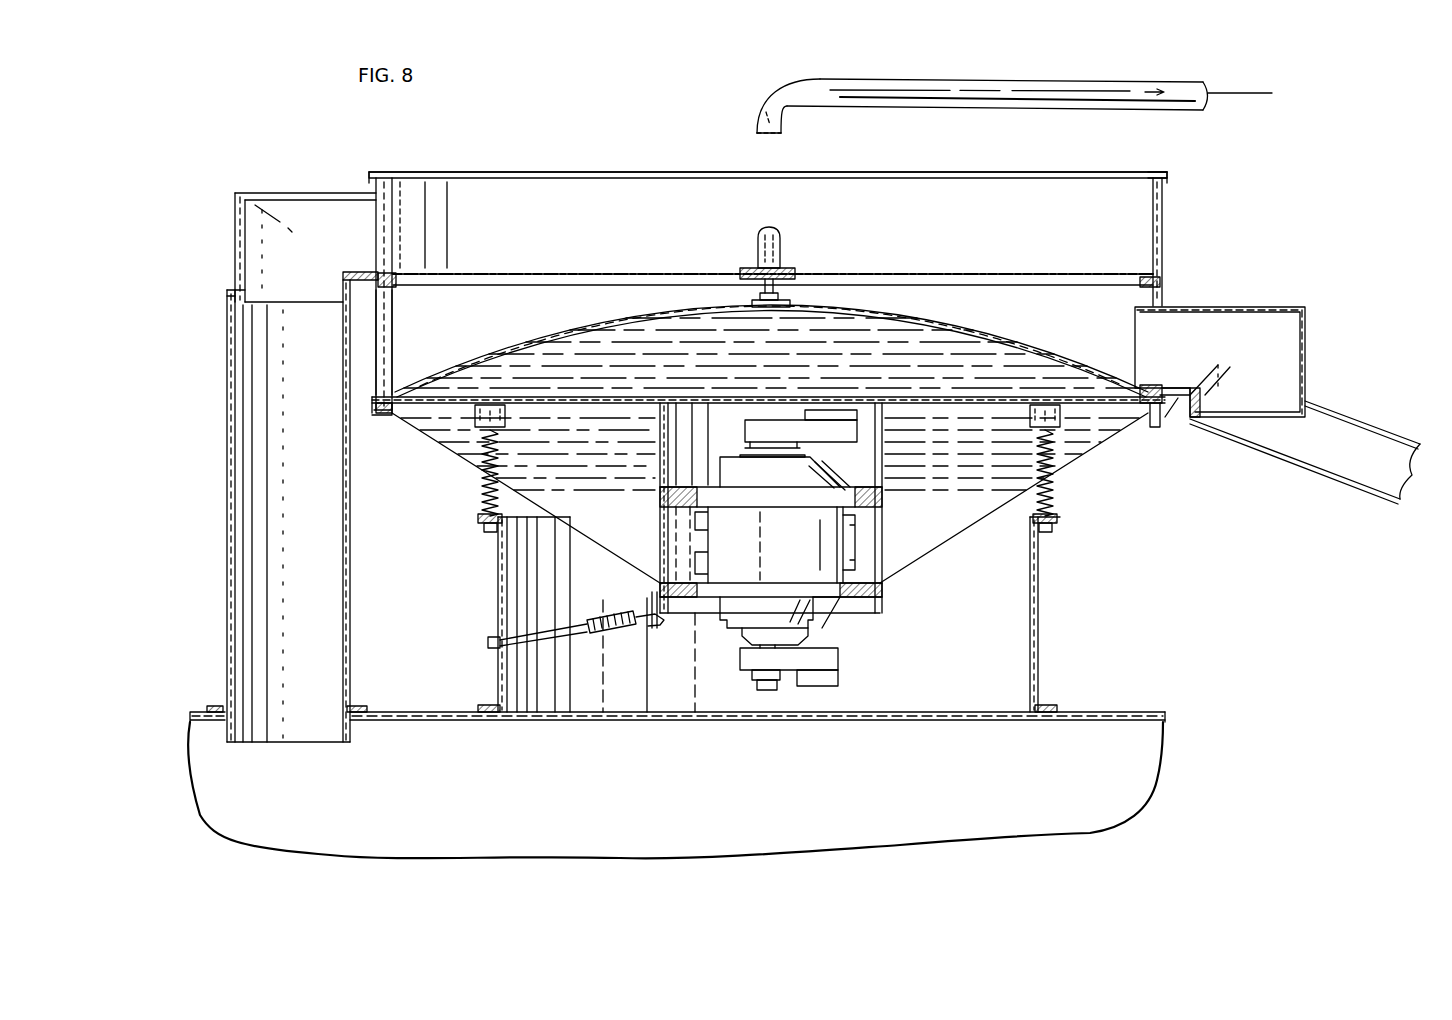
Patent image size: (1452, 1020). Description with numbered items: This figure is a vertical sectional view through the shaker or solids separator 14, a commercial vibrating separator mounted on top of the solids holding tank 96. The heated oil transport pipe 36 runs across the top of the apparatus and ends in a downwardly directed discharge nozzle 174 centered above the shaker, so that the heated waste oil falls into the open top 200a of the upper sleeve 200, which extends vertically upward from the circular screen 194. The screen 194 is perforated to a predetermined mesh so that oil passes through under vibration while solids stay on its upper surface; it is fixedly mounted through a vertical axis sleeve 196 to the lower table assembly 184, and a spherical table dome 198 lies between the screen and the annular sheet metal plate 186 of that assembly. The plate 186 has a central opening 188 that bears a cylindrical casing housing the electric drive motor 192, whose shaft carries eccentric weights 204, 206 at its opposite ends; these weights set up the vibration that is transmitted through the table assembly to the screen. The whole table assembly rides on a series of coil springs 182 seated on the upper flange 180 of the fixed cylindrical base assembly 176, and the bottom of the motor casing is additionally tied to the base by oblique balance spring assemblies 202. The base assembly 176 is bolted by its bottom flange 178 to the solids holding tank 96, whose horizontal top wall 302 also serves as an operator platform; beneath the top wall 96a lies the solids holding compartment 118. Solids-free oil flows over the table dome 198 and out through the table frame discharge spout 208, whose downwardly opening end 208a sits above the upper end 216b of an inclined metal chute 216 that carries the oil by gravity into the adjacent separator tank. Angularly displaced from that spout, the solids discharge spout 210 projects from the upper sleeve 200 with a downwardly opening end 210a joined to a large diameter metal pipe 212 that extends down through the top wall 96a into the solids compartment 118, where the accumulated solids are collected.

The shaker 14 is at (315, 158).
The heated oil transport pipe 36 is at (996, 86).
The discharge nozzle 174 is at (760, 120).
The sleeve 200 is at (1163, 250).
The open top 200a is at (1146, 172).
The screen 194 is at (968, 272).
The table dome 198 is at (590, 324).
The sleeve 196 is at (392, 326).
The lower table assembly 184 is at (620, 392).
The annular sheet metal plate 186 is at (950, 398).
The opening 188 is at (662, 400).
The electric drive motor 192 is at (668, 420).
The eccentric weight 204 is at (832, 410).
The eccentric weight 206 is at (838, 656).
The coil springs 182 is at (480, 500).
The upper flange 180 is at (1058, 525).
The cylindrical base assembly 176 is at (1040, 651).
The top wall of solids holding tank 302 is at (580, 680).
The balance spring assemblies 202 is at (616, 618).
The solids holding tank 96 is at (1165, 710).
The top wall 96a is at (405, 712).
The bottom flange 178 is at (1058, 708).
The solids holding compartment 118 is at (448, 795).
The solids discharge spout 210 is at (235, 268).
The end of solids discharge spout 210a is at (290, 304).
The metal pipe 212 is at (227, 532).
The table frame discharge spout 208 is at (1305, 386).
The upper end of chute 216b is at (1182, 412).
The open end 208a is at (1210, 425).
The inclined metal chute 216 is at (1350, 481).